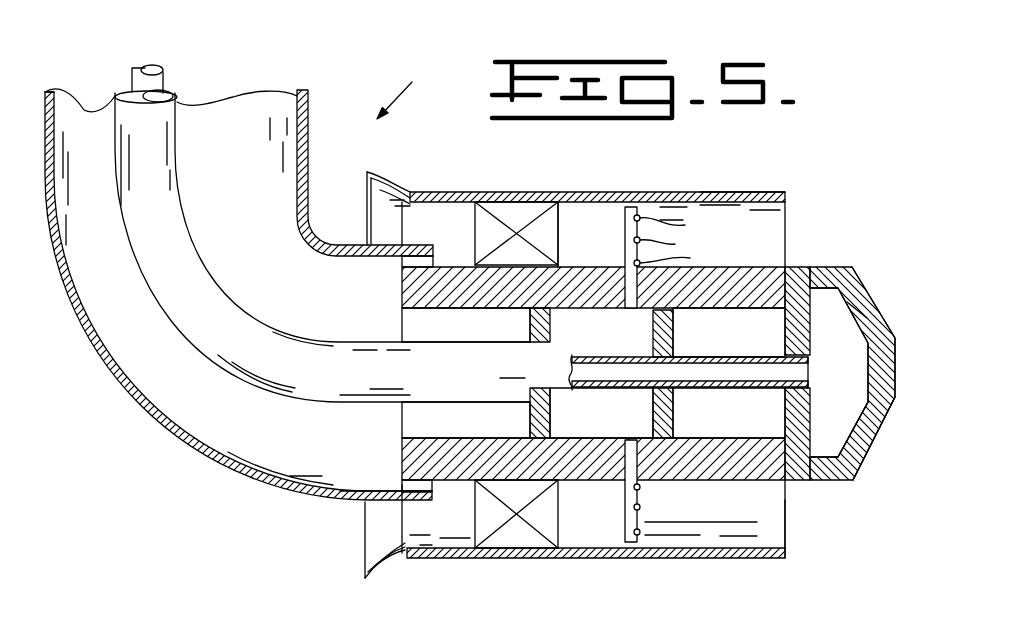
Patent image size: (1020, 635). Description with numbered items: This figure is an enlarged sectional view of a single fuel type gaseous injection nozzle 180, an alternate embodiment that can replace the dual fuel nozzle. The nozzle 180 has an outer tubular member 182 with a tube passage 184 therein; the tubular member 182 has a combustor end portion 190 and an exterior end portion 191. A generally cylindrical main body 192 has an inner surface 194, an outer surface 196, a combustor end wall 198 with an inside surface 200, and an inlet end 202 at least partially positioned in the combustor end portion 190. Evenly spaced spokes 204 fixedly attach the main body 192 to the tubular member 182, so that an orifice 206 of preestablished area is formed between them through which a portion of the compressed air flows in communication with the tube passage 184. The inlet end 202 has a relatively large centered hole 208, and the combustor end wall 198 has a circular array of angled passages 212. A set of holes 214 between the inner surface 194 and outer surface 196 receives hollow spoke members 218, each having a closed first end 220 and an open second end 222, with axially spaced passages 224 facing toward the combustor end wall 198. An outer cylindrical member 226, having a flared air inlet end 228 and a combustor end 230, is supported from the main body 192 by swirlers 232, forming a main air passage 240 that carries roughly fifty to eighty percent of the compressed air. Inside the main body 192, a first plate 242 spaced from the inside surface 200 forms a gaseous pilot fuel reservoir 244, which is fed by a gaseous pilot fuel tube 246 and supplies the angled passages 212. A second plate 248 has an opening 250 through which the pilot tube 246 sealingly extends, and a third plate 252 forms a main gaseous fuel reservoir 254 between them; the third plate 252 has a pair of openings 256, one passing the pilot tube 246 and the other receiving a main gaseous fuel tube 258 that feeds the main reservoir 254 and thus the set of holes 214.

The single fuel type gaseous injection nozzle 180 is at (415, 94).
The outer tubular member 182 is at (60, 292).
The tube passage 184 is at (170, 372).
The combustor end portion 190 is at (446, 213).
The exterior end portion 191 is at (46, 102).
The main body 192 is at (726, 310).
The inner surface 194 is at (781, 273).
The outer surface 196 is at (770, 306).
The combustor end wall 198 is at (928, 323).
The inside surface 200 is at (884, 423).
The inlet end 202 is at (341, 497).
The spokes 204 is at (408, 486).
The orifice 206 is at (402, 548).
The hole 208 is at (402, 432).
The angled passages 212 is at (863, 447).
The set of holes 214 is at (624, 295).
The hollow spoke members 218 is at (640, 507).
The first end 220 is at (634, 207).
The second end 222 is at (632, 310).
The passages 224 is at (658, 240).
The outer cylindrical member 226 is at (704, 195).
The flared air inlet end 228 is at (367, 172).
The combustor end 230 is at (786, 523).
The swirlers 232 is at (560, 517).
The main air passage 240 is at (610, 251).
The first plate 242 is at (784, 418).
The gaseous pilot fuel reservoir 244 is at (855, 354).
The gaseous pilot fuel tube 246 is at (163, 75).
The second plate 248 is at (676, 412).
The opening 250 is at (670, 372).
The third plate 252 is at (530, 408).
The main gaseous fuel reservoir 254 is at (622, 432).
The pair of openings 256 is at (545, 343).
The main gaseous fuel tube 258 is at (197, 240).